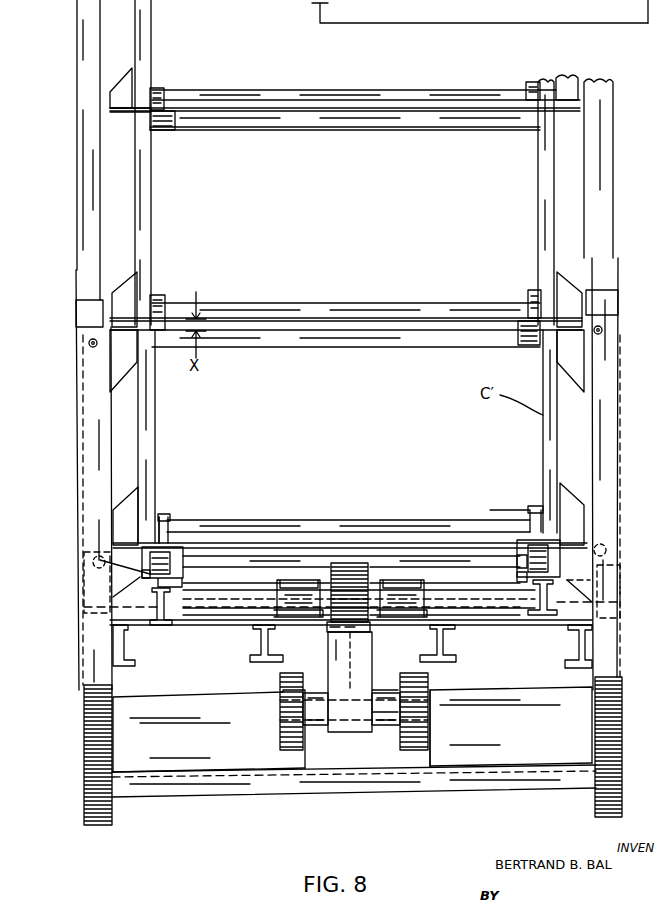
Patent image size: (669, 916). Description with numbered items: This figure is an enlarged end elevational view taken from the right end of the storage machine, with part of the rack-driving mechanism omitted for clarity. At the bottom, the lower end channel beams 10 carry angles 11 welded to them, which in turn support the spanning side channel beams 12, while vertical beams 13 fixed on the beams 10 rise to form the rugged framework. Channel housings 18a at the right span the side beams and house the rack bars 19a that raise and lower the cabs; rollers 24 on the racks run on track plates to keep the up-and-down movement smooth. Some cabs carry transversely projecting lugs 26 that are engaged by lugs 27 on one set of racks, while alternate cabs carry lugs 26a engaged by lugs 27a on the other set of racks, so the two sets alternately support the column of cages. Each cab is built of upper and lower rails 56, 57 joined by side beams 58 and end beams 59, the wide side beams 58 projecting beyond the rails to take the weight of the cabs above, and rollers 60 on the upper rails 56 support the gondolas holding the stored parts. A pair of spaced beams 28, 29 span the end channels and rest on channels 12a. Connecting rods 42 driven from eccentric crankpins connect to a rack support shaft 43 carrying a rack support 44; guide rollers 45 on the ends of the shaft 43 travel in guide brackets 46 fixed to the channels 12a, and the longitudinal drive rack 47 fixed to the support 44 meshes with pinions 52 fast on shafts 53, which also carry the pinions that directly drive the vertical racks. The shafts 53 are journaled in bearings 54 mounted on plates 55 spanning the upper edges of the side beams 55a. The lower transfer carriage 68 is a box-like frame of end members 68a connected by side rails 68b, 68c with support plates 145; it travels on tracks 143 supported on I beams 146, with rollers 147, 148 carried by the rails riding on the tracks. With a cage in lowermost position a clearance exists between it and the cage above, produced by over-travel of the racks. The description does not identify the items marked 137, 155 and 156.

The lower end channel beams 10 is at (524, 725).
The angles 11 is at (180, 789).
The side channel beams 12 is at (590, 695).
The channels 12a is at (437, 715).
The vertical beams 13 is at (80, 60).
The channel housings 18a is at (92, 643).
The rack bar 19a is at (86, 792).
The rollers 24 is at (86, 341).
The lugs 26 is at (118, 98).
The lugs 26a is at (567, 272).
The lugs 27 is at (85, 605).
The lugs 27a is at (123, 370).
The beam 28 is at (260, 625).
The beam 29 is at (452, 625).
The connecting rods 42 is at (365, 732).
The rack support shaft 43 is at (385, 700).
The rack support 44 is at (358, 667).
The guide rollers 45 is at (283, 688).
The guide brackets 46 is at (315, 727).
The drive rack 47 is at (345, 626).
The pinions 52 is at (358, 565).
The shafts 53 is at (455, 586).
The bearings 54 is at (280, 582).
The plates 55 is at (180, 620).
The side beams 55a is at (132, 643).
The upper rails 56 is at (157, 96).
The lower rails 57 is at (352, 115).
The side beams 58 is at (144, 223).
The end beams 59 is at (268, 93).
The rollers 60 is at (533, 84).
The lower carriage 68 is at (353, 530).
The end members 68a is at (260, 543).
The side rail 68b is at (100, 557).
The side rail 68c is at (190, 543).
The clamp block 137 is at (162, 124).
The tracks 143 is at (100, 560).
The support plates 145 is at (168, 546).
The I beams 146 is at (182, 597).
The rollers 147 is at (524, 560).
The rollers 148 is at (523, 577).
The upper frame member 155 is at (551, 0).
The upper frame member 156 is at (615, 0).